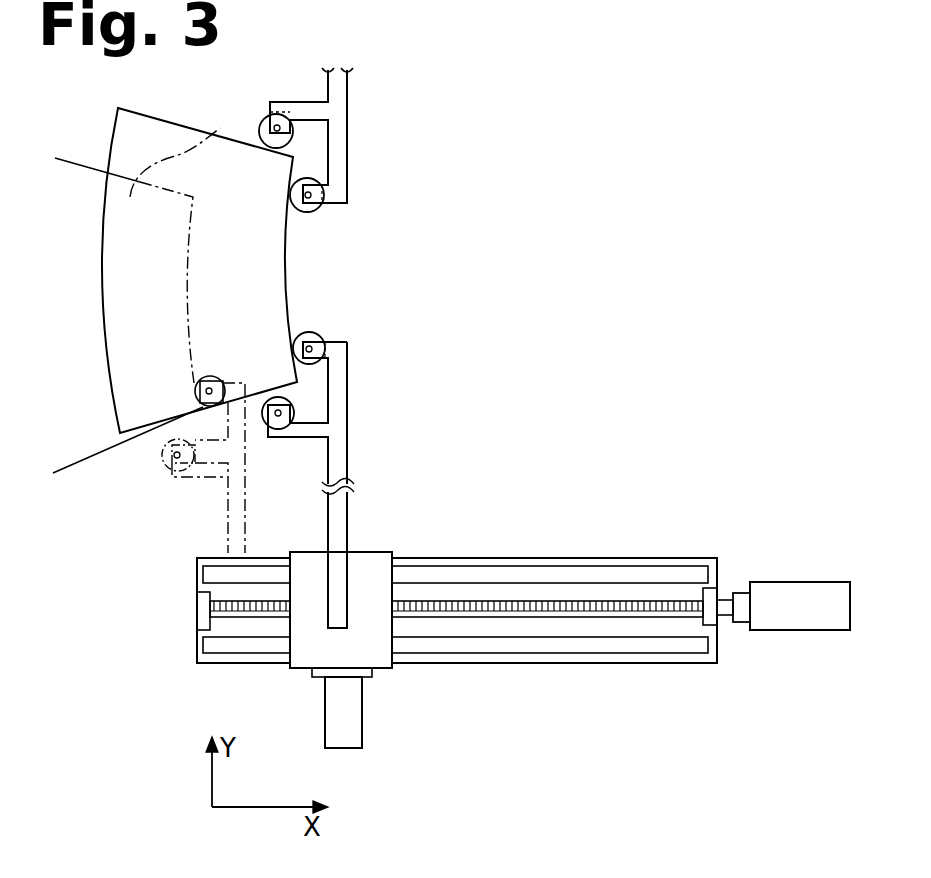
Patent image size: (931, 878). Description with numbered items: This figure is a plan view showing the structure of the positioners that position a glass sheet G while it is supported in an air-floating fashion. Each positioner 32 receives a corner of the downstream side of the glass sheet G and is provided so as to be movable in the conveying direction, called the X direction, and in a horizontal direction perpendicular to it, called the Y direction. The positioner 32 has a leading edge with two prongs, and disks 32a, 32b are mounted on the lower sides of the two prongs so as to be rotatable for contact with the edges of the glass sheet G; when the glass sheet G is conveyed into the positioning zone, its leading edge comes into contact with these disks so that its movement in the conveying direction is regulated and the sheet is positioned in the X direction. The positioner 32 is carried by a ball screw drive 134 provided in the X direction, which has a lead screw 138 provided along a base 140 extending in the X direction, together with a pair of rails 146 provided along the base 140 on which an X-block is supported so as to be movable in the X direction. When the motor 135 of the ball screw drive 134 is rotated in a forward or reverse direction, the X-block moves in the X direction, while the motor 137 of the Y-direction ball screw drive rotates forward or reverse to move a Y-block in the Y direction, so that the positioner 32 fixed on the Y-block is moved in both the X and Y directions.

The glass sheet G is at (208, 165).
The positioner 32 is at (383, 165).
The disk 32a is at (296, 332).
The disk 32b is at (195, 442).
The ball screw drive 134 is at (727, 590).
The motor 135 is at (793, 597).
The motor 137 is at (347, 711).
The lead screw 138 is at (565, 618).
The base 140 is at (457, 612).
The rail 146 is at (468, 573).